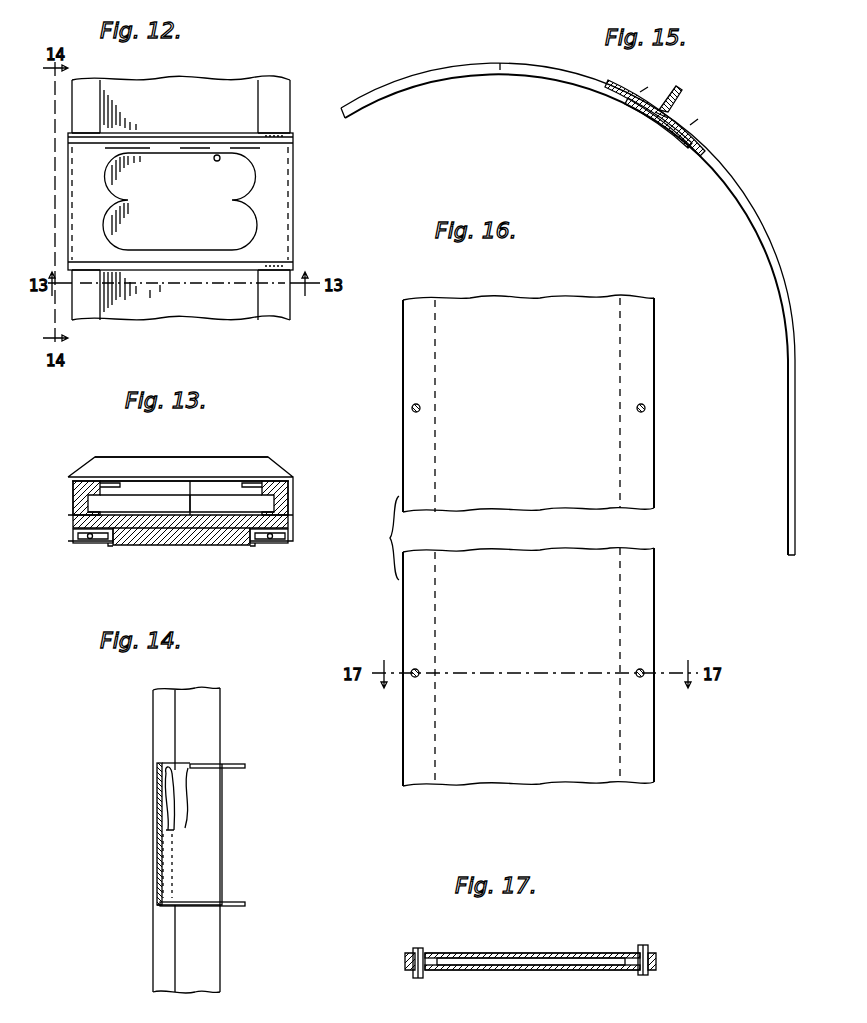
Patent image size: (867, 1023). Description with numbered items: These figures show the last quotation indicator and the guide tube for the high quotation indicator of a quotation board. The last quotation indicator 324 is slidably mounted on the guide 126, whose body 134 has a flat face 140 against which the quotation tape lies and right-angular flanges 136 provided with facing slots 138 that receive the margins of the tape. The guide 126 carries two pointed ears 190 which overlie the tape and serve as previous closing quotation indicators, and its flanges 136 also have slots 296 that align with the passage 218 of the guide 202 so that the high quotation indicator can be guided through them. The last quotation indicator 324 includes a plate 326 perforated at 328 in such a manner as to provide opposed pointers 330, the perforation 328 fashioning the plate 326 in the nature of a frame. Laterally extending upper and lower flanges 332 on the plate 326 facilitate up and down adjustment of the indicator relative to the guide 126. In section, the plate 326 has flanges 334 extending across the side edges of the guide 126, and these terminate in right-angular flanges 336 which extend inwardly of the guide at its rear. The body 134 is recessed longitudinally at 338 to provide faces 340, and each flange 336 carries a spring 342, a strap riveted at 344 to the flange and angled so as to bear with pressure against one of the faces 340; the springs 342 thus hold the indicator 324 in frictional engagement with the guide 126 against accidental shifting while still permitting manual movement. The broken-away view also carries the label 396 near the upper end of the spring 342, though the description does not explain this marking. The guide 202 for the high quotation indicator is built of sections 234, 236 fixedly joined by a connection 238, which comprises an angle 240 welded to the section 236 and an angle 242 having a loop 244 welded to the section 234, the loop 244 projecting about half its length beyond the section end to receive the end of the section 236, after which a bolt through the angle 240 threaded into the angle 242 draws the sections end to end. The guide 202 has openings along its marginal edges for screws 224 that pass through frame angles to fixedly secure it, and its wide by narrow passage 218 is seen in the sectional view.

In FIG. 12, the guide 126 is at (292, 100).
In FIG. 13, the guide 126 is at (185, 546).
In FIG. 14, the guide 126 is at (222, 705).
In FIG. 12, the last quotation indicator 324 is at (280, 176).
In FIG. 13, the last quotation indicator 324 is at (270, 475).
In FIG. 14, the last quotation indicator 324 is at (214, 826).
In FIG. 12, the plate 326 is at (282, 147).
In FIG. 13, the plate 326 is at (163, 480).
In FIG. 12, the perforation 328 is at (217, 155).
In FIG. 12, the opposed pointers 330 is at (228, 200).
In FIG. 12, the upper and lower flanges 332 is at (162, 131).
In FIG. 13, the upper and lower flanges 332 is at (212, 460).
In FIG. 14, the upper and lower flanges 332 is at (245, 764).
In FIG. 13, the pointed ears 190 is at (112, 482).
In FIG. 13, the face 140 is at (192, 490).
In FIG. 13, the right-angular flanges 136 is at (80, 498).
In FIG. 13, the slots 296 is at (120, 495).
In FIG. 13, the facing slots 138 is at (100, 507).
In FIG. 13, the flanges 334 is at (290, 502).
In FIG. 14, the flanges 334 is at (218, 858).
In FIG. 13, the faces 340 is at (78, 535).
In FIG. 14, the faces 340 is at (175, 736).
In FIG. 13, the right-angular flanges 336 is at (86, 546).
In FIG. 14, the right-angular flanges 336 is at (158, 816).
In FIG. 13, the recess 338 is at (110, 547).
In FIG. 13, the body 134 is at (163, 532).
In FIG. 14, the spring 342 is at (173, 800).
In FIG. 14, the hook 396 is at (176, 781).
In FIG. 14, the rivet 344 is at (160, 897).
In FIG. 15, the section 234 is at (529, 71).
In FIG. 15, the section 236 is at (756, 210).
In FIG. 15, the passage 218 is at (707, 143).
In FIG. 17, the passage 218 is at (503, 960).
In FIG. 15, the loop 244 is at (658, 115).
In FIG. 15, the angle 240 is at (688, 100).
In FIG. 15, the connection 238 is at (680, 90).
In FIG. 15, the angle 242 is at (662, 106).
In FIG. 16, the guide 202 is at (645, 458).
In FIG. 17, the guide 202 is at (578, 952).
In FIG. 16, the screws 224 is at (412, 411).
In FIG. 17, the screws 224 is at (416, 950).